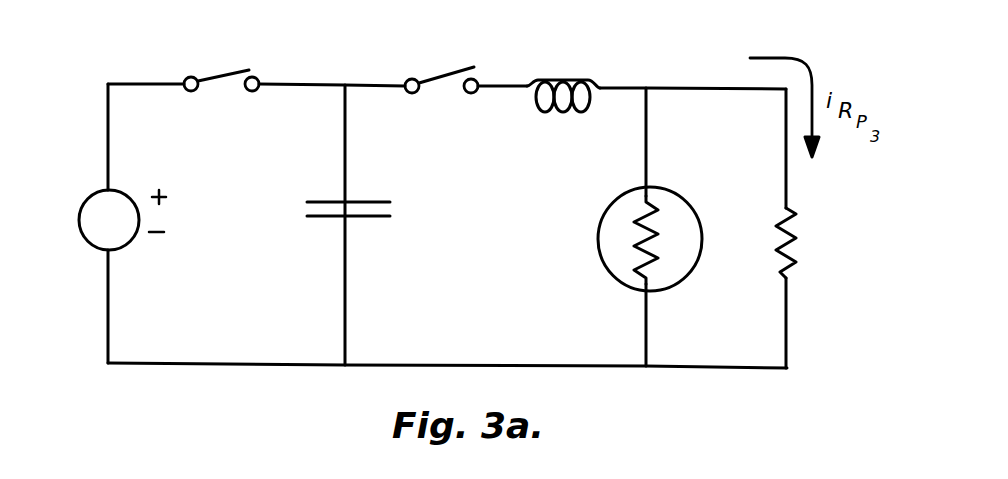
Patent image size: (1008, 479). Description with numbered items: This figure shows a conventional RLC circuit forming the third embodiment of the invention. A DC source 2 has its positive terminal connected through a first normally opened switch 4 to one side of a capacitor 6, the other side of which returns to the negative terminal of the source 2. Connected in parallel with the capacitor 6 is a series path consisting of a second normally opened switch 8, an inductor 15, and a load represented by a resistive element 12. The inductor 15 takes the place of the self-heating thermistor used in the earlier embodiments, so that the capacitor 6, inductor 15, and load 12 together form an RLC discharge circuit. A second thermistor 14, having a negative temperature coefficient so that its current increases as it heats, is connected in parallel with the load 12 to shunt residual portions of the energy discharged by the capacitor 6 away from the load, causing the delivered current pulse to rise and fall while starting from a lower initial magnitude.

The DC source 2 is at (88, 203).
The first normally opened switch 4 is at (221, 73).
The capacitor 6 is at (305, 208).
The second normally opened switch 8 is at (437, 78).
The resistive element 12 is at (783, 212).
The second thermistor 14 is at (622, 208).
The inductor 15 is at (558, 80).